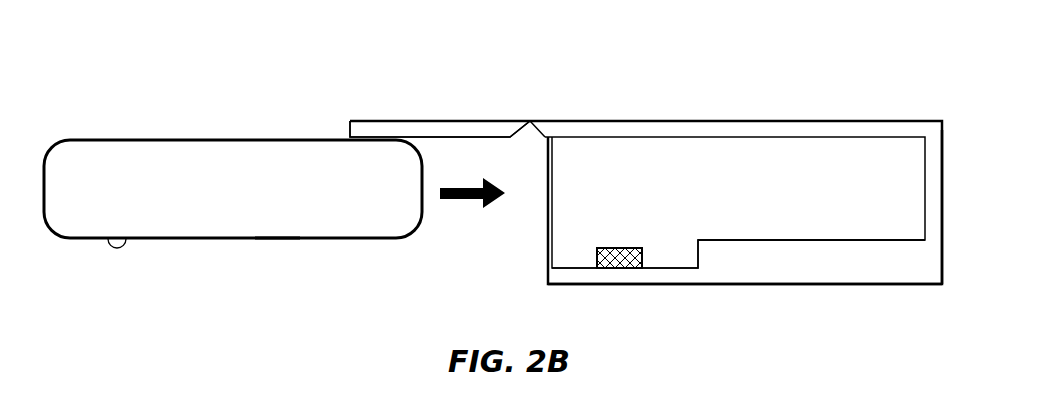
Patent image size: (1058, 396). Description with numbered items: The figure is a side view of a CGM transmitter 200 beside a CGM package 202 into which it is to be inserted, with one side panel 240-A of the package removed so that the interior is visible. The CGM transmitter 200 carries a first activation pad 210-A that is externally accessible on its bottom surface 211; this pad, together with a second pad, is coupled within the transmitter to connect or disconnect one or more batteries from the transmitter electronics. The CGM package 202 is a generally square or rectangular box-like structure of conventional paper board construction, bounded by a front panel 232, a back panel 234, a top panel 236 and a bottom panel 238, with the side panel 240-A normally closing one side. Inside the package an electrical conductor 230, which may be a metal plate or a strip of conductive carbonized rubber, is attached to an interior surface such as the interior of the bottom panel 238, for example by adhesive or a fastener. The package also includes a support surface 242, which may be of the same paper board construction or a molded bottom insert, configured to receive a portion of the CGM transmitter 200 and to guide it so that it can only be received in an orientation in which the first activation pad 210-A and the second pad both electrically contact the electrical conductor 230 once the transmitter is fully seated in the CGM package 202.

The CGM transmitter 200 is at (134, 140).
The first activation pad 210-A is at (118, 248).
The bottom surface 211 is at (277, 242).
The CGM package 202 is at (615, 121).
The front panel 232 is at (433, 121).
The top panel 236 is at (775, 121).
The back panel 234 is at (942, 140).
The bottom panel 238 is at (715, 286).
The side panel 240-A is at (738, 214).
The support surface 242 is at (828, 240).
The electrical conductor 230 is at (624, 248).